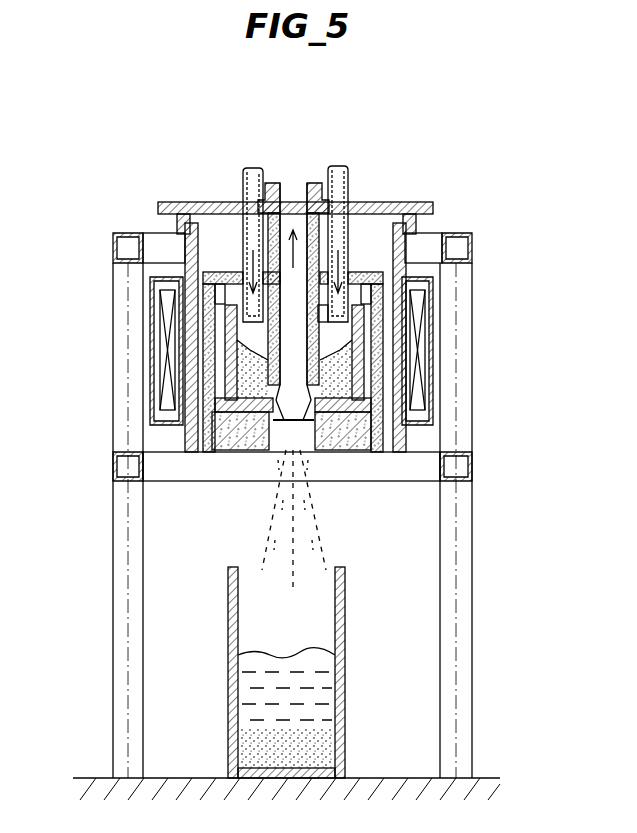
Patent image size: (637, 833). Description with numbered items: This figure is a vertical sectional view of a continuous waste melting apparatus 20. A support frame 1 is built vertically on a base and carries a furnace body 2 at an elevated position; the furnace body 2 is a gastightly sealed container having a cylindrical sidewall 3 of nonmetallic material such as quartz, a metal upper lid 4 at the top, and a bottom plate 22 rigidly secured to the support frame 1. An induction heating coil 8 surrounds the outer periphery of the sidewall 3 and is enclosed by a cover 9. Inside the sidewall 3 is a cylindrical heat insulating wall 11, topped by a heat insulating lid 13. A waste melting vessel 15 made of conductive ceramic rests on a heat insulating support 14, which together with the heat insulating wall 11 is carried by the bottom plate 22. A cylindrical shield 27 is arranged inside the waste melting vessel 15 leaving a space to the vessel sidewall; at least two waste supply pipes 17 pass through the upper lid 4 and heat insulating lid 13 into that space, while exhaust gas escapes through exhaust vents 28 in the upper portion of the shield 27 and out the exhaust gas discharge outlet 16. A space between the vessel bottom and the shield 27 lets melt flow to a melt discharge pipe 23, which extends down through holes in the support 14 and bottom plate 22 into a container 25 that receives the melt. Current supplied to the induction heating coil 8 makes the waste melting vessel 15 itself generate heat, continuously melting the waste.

The support frame 1 is at (462, 560).
The furnace body 2 is at (419, 443).
The sidewall 3 is at (400, 248).
The upper lid 4 is at (425, 204).
The induction heating coil 8 is at (420, 360).
The cover 9 is at (430, 300).
The heat insulating wall 11 is at (365, 417).
The heat insulating lid 13 is at (215, 283).
The support 14 is at (370, 452).
The waste melting vessel 15 is at (358, 385).
The exhaust gas discharge outlet 16 is at (292, 183).
The waste supply pipe 17 is at (254, 170).
The continuous waste melting apparatus 20 is at (320, 162).
The bottom plate 22 is at (430, 472).
The melt discharge pipe 23 is at (298, 452).
The container 25 is at (345, 690).
The shield 27 is at (245, 350).
The exhaust vents 28 is at (328, 322).